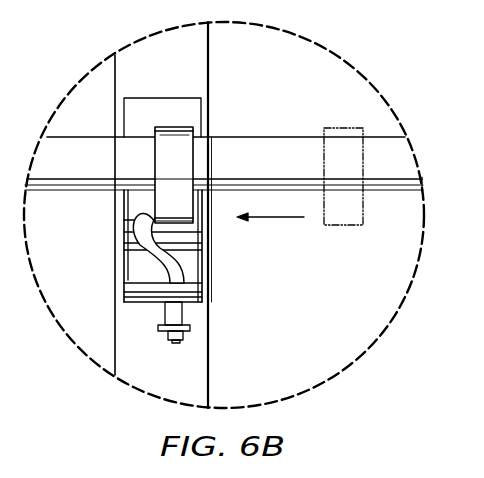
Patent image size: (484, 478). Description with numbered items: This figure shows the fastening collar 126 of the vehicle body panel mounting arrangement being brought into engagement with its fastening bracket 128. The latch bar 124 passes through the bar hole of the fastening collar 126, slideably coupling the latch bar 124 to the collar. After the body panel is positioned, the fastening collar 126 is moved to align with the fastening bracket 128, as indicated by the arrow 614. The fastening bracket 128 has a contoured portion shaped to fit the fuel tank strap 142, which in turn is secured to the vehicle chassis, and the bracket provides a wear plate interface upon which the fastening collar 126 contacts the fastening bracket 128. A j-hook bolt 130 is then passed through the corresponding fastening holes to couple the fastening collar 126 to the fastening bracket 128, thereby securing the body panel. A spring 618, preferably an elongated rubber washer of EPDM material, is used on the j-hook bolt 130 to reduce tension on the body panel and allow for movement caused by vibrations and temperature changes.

The latch bar 124 is at (383, 193).
The fastening collar 126 is at (187, 128).
The fastening bracket 128 is at (125, 262).
The j-hook bolt 130 is at (199, 263).
The fuel tank strap 142 is at (212, 362).
The arrow 614 is at (280, 219).
The spring 618 is at (188, 308).